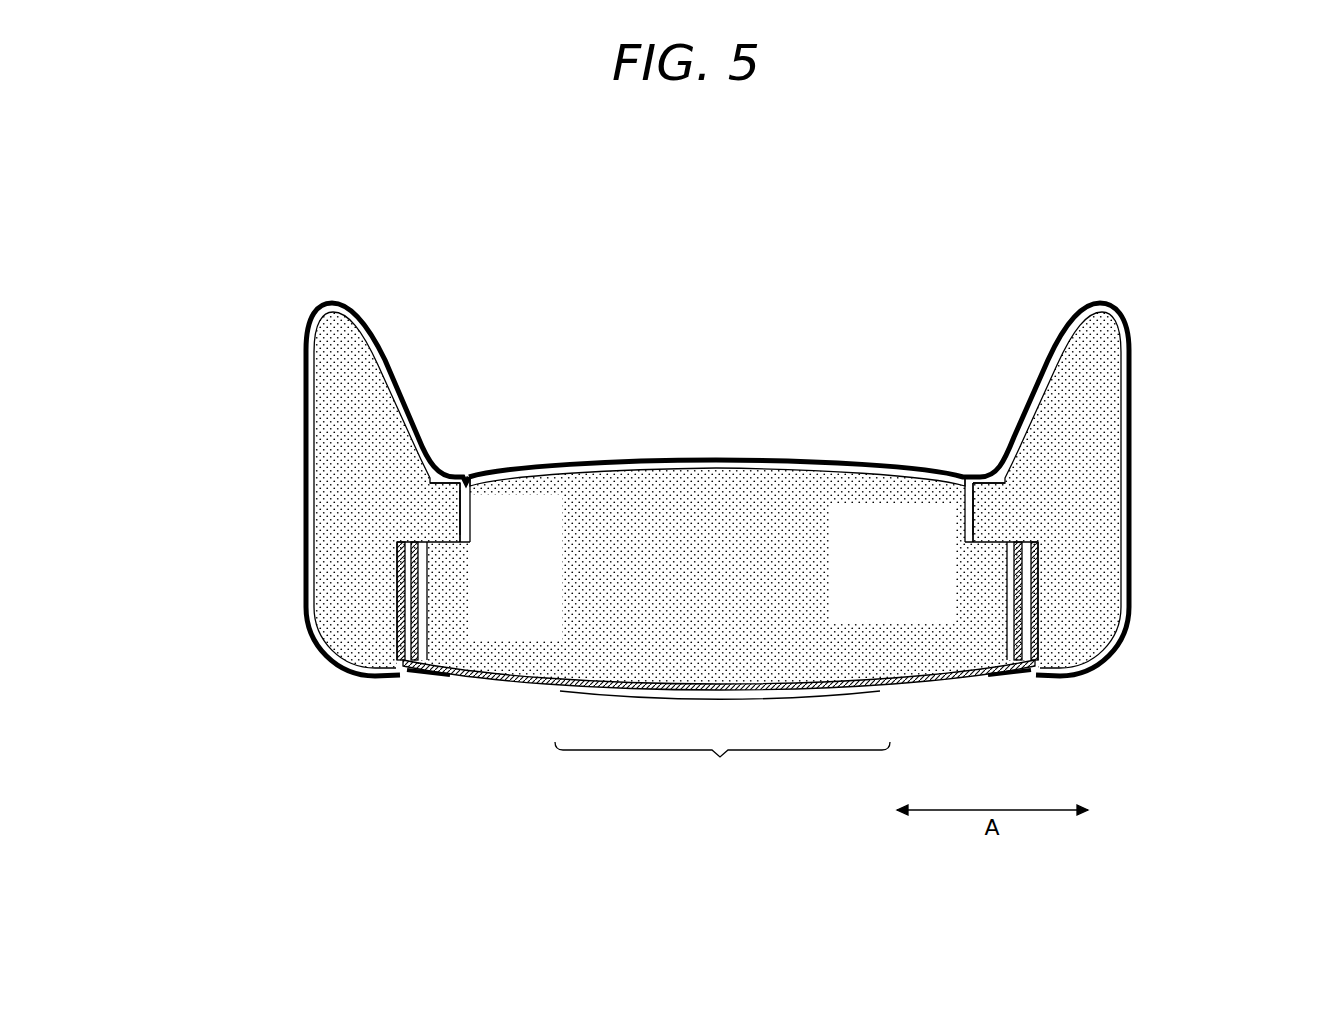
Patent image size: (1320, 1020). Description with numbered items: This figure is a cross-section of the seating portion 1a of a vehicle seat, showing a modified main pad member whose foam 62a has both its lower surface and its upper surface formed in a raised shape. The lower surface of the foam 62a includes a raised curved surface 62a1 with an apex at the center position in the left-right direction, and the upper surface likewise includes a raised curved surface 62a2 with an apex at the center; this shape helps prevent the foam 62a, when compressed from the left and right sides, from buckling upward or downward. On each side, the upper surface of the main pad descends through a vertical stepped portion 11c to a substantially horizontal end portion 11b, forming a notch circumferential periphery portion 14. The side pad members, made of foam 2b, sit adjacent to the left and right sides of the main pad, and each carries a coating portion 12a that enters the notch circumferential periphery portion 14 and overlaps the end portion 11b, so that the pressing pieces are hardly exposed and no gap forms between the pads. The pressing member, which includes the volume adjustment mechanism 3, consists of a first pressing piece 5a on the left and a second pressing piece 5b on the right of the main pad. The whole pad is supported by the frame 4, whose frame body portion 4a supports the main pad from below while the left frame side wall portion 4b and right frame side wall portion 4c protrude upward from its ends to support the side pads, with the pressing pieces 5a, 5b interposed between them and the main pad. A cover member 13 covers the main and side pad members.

The seating portion 1a is at (793, 281).
The foam 2b is at (345, 392).
The cover member 13 is at (1131, 400).
The notch circumferential periphery portion 14 is at (465, 480).
The foam 62a is at (705, 542).
The raised curved surface 62a2 is at (850, 470).
The raised curved surface 62a1 is at (966, 680).
The end portion 11b is at (437, 542).
The stepped portion 11c is at (468, 510).
The coating portion 12a is at (450, 530).
The first pressing piece 5a is at (413, 597).
The second pressing piece 5b is at (1018, 600).
The volume adjustment mechanism 3 is at (433, 612).
The frame 4 is at (722, 765).
The frame body portion 4a is at (720, 692).
The left frame side wall portion 4b is at (400, 638).
The right frame side wall portion 4c is at (1033, 633).